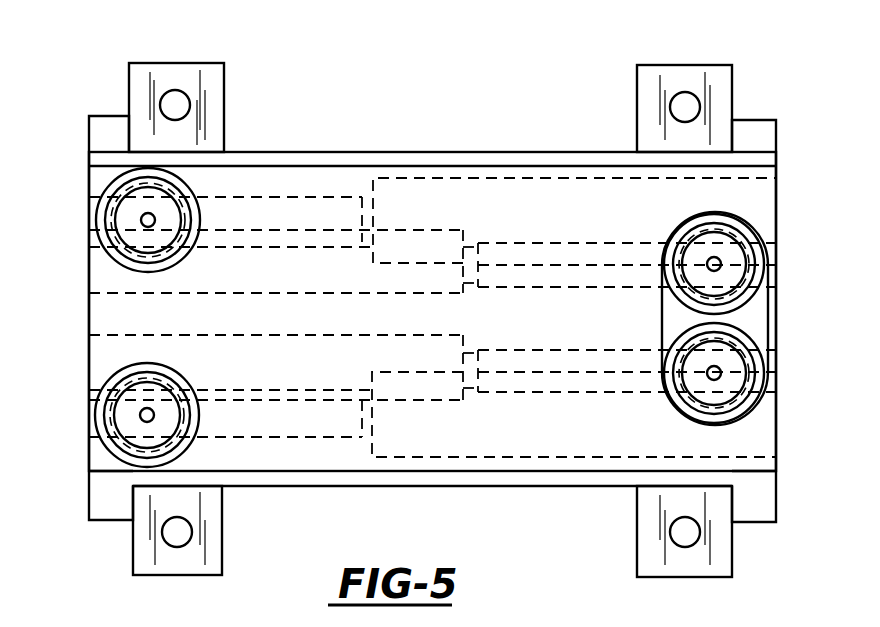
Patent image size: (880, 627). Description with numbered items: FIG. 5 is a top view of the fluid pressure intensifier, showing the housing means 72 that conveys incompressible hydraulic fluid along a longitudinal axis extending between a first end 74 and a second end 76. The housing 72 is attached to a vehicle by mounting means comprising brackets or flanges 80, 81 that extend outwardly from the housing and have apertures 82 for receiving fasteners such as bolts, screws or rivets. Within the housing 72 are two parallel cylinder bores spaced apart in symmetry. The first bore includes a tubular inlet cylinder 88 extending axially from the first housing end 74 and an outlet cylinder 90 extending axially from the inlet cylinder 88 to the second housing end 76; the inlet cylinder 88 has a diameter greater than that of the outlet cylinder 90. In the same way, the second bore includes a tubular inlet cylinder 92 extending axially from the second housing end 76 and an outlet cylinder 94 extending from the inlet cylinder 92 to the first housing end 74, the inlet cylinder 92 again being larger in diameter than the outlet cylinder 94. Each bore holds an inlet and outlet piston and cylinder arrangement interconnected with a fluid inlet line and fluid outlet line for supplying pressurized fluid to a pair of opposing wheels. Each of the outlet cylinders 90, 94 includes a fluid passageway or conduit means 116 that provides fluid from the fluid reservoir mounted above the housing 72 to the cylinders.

The housing means 72 is at (471, 152).
The first end 74 is at (778, 192).
The second end 76 is at (88, 278).
The brackets or flanges 80 is at (702, 74).
The brackets or flanges 81 is at (198, 72).
The apertures 82 is at (165, 98).
The inlet cylinder 88 is at (563, 185).
The outlet cylinder 90 is at (276, 196).
The inlet cylinder 92 is at (128, 335).
The outlet cylinder 94 is at (502, 296).
The conduit means 116 is at (108, 213).